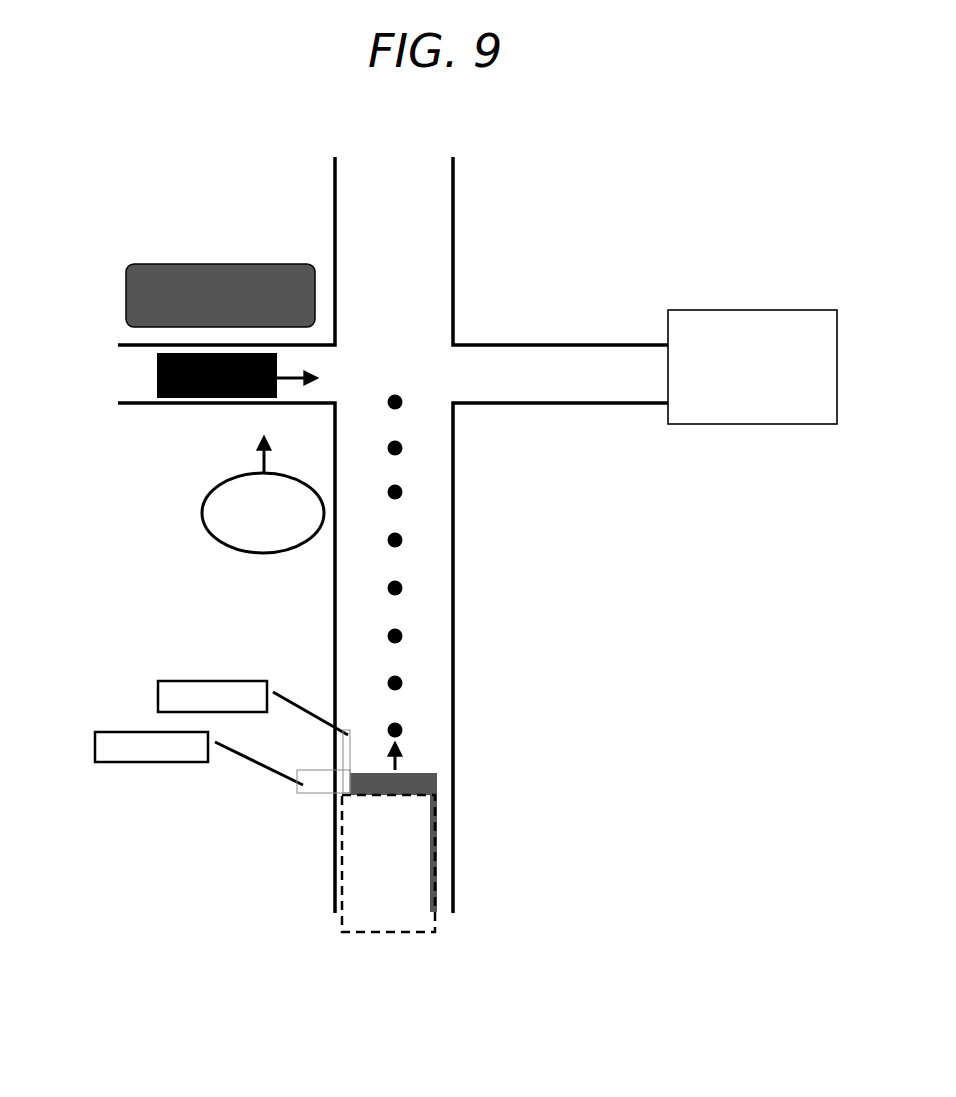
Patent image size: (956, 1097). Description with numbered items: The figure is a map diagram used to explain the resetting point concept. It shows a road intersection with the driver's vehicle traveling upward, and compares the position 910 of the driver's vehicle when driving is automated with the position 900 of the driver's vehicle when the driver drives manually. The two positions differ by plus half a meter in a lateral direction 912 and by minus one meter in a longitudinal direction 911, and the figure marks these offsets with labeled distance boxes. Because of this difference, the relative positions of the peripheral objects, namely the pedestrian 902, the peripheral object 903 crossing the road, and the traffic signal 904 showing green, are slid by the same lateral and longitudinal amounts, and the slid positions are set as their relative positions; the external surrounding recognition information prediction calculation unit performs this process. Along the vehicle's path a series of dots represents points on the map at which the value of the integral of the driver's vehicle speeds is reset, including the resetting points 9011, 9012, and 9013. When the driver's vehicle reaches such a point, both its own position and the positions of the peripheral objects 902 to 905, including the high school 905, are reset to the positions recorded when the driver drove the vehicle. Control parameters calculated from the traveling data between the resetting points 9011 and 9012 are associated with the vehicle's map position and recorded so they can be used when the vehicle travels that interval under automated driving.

The position of the driver's vehicle 900 is at (440, 770).
The resetting point 9011 is at (400, 725).
The resetting point 9012 is at (402, 673).
The resetting point 9013 is at (402, 625).
The pedestrian 902 is at (223, 533).
The peripheral object 903 is at (192, 395).
The peripheral object 904 is at (173, 262).
The peripheral object 905 is at (623, 407).
The position of the driver's vehicle 910 is at (347, 810).
The longitudinal direction 911 is at (187, 762).
The lateral direction 912 is at (165, 700).